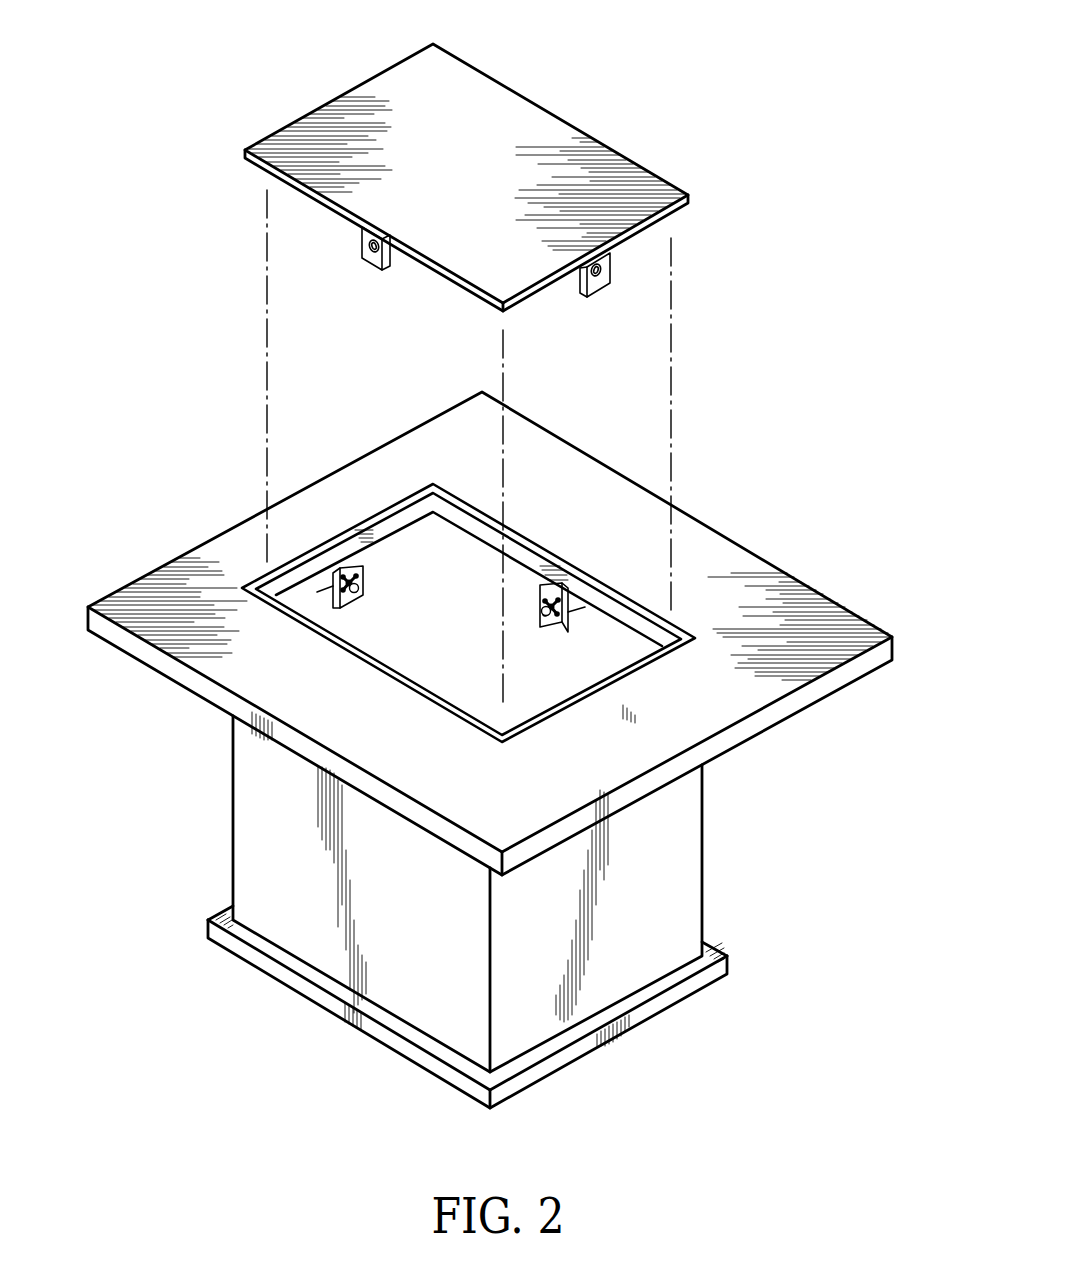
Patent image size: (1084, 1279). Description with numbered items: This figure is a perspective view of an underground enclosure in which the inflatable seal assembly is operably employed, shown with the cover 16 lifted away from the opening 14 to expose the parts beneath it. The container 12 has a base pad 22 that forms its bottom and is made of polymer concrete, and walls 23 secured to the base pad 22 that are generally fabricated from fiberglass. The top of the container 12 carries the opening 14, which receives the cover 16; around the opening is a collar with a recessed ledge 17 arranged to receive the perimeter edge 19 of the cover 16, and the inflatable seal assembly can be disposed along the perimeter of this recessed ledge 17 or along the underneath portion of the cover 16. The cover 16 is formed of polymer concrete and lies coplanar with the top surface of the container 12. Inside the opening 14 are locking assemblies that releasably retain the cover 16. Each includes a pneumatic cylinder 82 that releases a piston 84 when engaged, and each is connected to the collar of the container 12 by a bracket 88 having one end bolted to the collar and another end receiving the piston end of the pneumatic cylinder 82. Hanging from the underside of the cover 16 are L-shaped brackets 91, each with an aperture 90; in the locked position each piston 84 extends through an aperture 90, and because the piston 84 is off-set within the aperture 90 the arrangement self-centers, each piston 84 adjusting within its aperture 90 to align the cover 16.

The container 12 is at (705, 518).
The opening 14 is at (570, 683).
The cover 16 is at (528, 123).
The recessed ledge 17 is at (328, 558).
The perimeter edge 19 is at (290, 120).
The base pad 22 is at (337, 1010).
The walls 23 is at (283, 905).
The pneumatic cylinder 82 is at (323, 582).
The piston 84 is at (353, 600).
The bracket 88 is at (360, 568).
The aperture 90 is at (368, 243).
The L-shaped bracket 91 is at (367, 258).